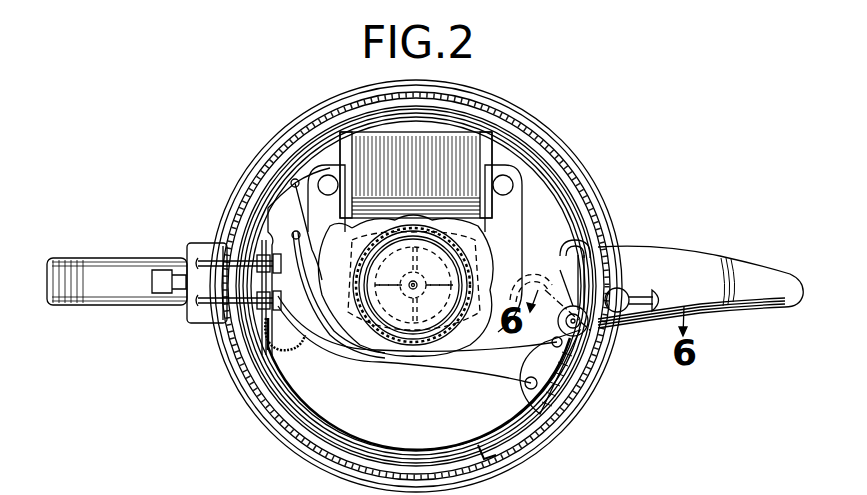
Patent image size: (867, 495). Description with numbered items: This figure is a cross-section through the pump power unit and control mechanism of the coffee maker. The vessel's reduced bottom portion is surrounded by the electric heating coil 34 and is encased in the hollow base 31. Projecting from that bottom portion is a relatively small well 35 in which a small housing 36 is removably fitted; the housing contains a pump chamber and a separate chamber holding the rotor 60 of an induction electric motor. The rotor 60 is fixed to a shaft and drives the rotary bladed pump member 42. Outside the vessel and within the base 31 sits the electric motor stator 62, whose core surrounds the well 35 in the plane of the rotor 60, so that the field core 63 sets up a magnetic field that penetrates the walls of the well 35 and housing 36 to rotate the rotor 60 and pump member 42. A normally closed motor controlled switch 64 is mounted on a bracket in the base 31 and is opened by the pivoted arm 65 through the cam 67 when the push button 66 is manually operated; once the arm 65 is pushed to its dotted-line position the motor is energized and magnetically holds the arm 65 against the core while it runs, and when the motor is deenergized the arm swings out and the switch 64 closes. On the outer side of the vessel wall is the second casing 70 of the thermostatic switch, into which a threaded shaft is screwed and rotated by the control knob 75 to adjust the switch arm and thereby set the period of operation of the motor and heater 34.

The hollow base 31 is at (572, 170).
The electric heating coil 34 is at (520, 147).
The well 35 is at (372, 240).
The housing 36 is at (362, 266).
The rotary bladed pump member 42 is at (378, 350).
The rotor 60 is at (437, 272).
The electric motor stator 62 is at (512, 228).
The field core 63 is at (432, 148).
The motor controlled switch 64 is at (547, 370).
The pivoted arm 65 is at (545, 268).
The push button 66 is at (636, 300).
The cam 67 is at (590, 331).
The second casing 70 is at (206, 244).
The control knob 75 is at (170, 277).